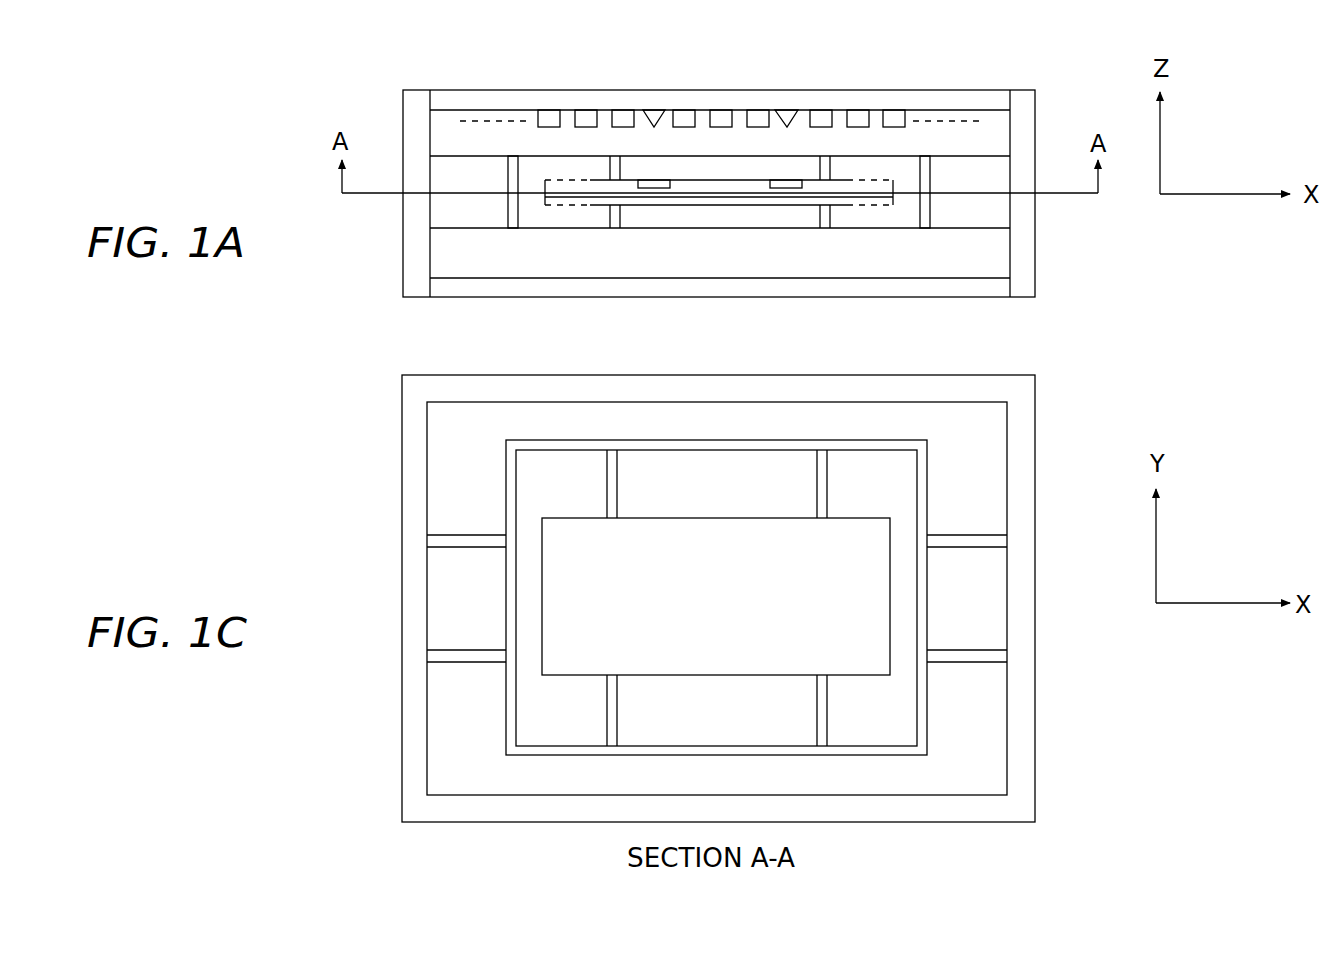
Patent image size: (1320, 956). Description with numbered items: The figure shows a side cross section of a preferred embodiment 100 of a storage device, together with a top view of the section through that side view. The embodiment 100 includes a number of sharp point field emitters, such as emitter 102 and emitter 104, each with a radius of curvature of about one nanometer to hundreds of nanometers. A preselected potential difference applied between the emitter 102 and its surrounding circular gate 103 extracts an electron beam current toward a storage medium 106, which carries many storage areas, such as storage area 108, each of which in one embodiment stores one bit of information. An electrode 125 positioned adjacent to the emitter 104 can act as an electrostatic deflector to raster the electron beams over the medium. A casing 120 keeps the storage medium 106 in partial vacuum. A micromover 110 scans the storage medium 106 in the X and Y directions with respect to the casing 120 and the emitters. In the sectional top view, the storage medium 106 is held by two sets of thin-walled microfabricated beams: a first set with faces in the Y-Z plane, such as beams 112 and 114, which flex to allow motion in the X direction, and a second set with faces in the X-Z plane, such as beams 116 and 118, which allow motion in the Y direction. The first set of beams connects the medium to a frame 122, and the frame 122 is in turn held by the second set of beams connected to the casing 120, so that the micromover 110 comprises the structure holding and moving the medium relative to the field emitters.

In FIG. 1A, the preferred embodiment 100 is at (273, 70).
In FIG. 1A, the field emitter 102 is at (650, 110).
In FIG. 1A, the circular gate 103 is at (623, 110).
In FIG. 1A, the field emitter 104 is at (787, 110).
In FIG. 1A, the storage medium 106 is at (552, 198).
In FIG. 1C, the storage medium 106 is at (740, 609).
In FIG. 1A, the storage area 108 is at (650, 180).
In FIG. 1A, the micromover 110 is at (470, 232).
In FIG. 1C, the thin-walled beam 112 is at (623, 487).
In FIG. 1C, the thin-walled beam 114 is at (842, 488).
In FIG. 1C, the thin-walled beam 116 is at (968, 650).
In FIG. 1A, the thin-walled beam 118 is at (988, 188).
In FIG. 1C, the thin-walled beam 118 is at (957, 542).
In FIG. 1A, the casing 120 is at (1025, 265).
In FIG. 1C, the casing 120 is at (1018, 758).
In FIG. 1A, the frame 122 is at (918, 173).
In FIG. 1C, the frame 122 is at (927, 467).
In FIG. 1A, the electrode 125 is at (720, 110).